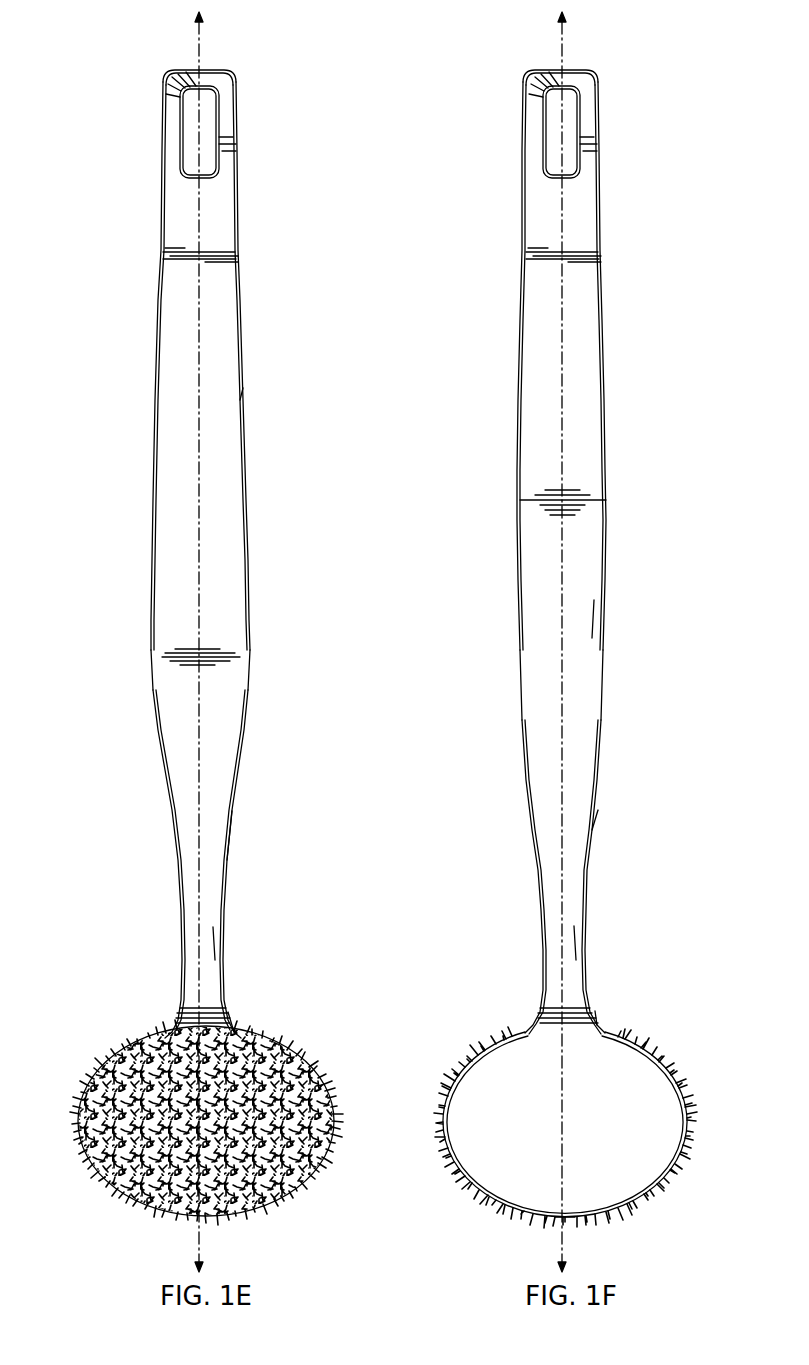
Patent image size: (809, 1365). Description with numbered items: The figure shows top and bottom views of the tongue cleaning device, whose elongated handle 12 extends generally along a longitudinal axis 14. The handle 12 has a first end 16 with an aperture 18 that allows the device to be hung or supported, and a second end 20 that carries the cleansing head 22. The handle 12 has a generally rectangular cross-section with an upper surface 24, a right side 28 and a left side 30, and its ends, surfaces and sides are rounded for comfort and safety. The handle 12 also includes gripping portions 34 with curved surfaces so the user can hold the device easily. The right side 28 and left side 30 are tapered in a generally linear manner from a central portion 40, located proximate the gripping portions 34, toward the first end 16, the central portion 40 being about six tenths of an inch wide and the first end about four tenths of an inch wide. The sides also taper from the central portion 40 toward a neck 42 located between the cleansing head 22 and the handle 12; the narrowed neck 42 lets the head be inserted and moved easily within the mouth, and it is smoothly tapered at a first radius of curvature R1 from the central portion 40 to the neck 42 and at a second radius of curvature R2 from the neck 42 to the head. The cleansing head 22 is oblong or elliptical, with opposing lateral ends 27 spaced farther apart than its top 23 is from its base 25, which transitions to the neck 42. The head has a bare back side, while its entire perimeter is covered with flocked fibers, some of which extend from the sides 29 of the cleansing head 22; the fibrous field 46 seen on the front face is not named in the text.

In FIG. 1E, the handle 12 is at (176, 343).
In FIG. 1F, the handle 12 is at (539, 343).
In FIG. 1E, the longitudinal axis 14 is at (196, 37).
In FIG. 1F, the longitudinal axis 14 is at (558, 37).
In FIG. 1E, the first end 16 is at (152, 130).
In FIG. 1F, the first end 16 is at (516, 129).
In FIG. 1E, the aperture 18 is at (203, 128).
In FIG. 1F, the aperture 18 is at (566, 128).
In FIG. 1E, the second end 20 is at (152, 845).
In FIG. 1F, the second end 20 is at (518, 873).
In FIG. 1E, the cleansing head 22 is at (290, 1193).
In FIG. 1F, the cleansing head 22 is at (682, 1093).
In FIG. 1F, the top 23 is at (570, 1219).
In FIG. 1E, the upper surface 24 is at (243, 388).
In FIG. 1F, the upper surface 24 is at (592, 638).
In FIG. 1E, the base 25 is at (248, 1027).
In FIG. 1F, the base 25 is at (519, 1034).
In FIG. 1E, the lateral ends 27 is at (333, 1132).
In FIG. 1F, the lateral ends 27 is at (688, 1130).
In FIG. 1F, the right side 28 is at (518, 471).
In FIG. 1F, the sides 29 is at (676, 1052).
In FIG. 1E, the left side 30 is at (154, 471).
In FIG. 1F, the left side 30 is at (605, 388).
In FIG. 1E, the gripping portions 34 is at (264, 646).
In FIG. 1E, the central portion 40 is at (139, 655).
In FIG. 1F, the central portion 40 is at (482, 649).
In FIG. 1E, the neck 42 is at (213, 927).
In FIG. 1F, the neck 42 is at (574, 926).
In FIG. 1E, the bristle field 46 is at (80, 1094).
In FIG. 1E, the first radius of curvature R1 is at (232, 811).
In FIG. 1F, the first radius of curvature R1 is at (598, 810).
In FIG. 1E, the second radius of curvature R2 is at (230, 1011).
In FIG. 1F, the second radius of curvature R2 is at (595, 1011).